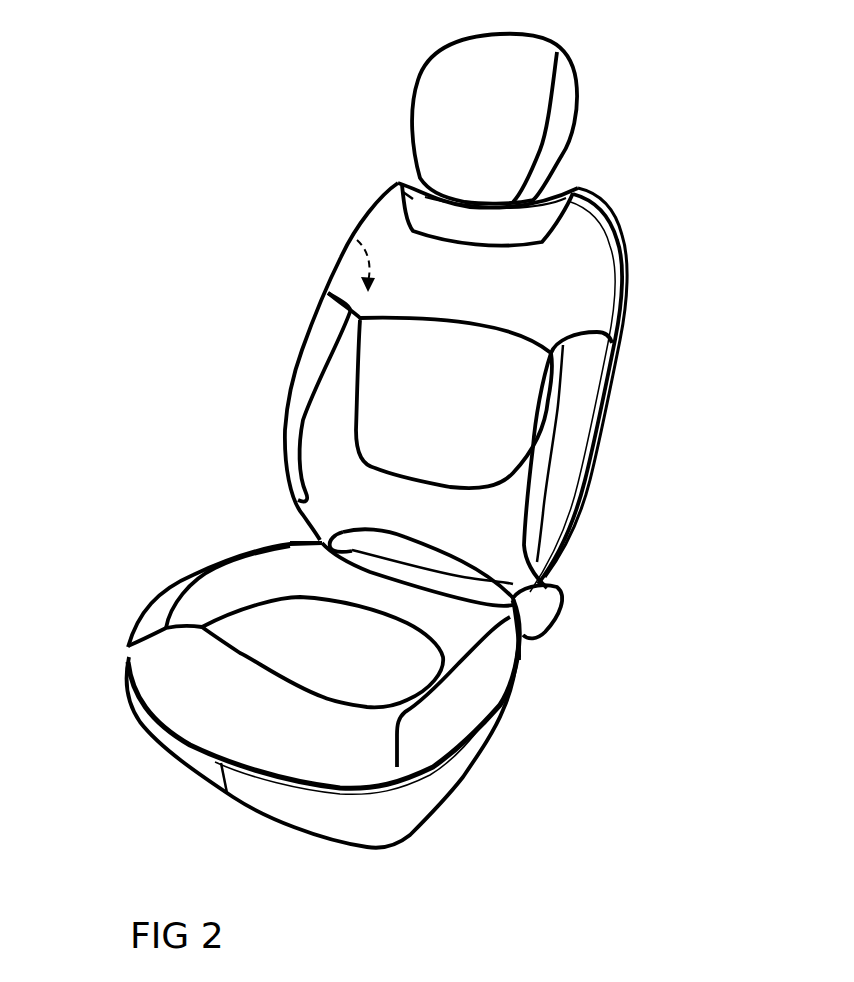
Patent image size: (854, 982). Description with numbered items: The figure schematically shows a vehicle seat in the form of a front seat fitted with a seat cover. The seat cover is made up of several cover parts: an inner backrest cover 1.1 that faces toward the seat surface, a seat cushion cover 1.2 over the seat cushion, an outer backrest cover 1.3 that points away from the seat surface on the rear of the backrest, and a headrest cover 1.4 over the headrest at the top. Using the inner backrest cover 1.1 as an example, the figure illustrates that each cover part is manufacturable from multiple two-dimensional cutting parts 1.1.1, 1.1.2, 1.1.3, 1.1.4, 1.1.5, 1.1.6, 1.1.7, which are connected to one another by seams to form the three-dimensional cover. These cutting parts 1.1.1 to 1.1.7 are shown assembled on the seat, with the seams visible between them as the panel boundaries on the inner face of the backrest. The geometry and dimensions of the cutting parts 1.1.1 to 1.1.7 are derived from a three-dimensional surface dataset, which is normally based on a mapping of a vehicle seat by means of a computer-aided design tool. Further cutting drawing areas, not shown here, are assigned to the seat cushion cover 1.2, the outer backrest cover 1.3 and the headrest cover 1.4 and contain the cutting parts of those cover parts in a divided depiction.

The inner backrest cover 1.1 is at (298, 354).
The cutting part 1.1.1 is at (295, 457).
The cutting part 1.1.2 is at (523, 525).
The cutting part 1.1.3 is at (527, 382).
The cutting part 1.1.4 is at (577, 457).
The cutting part 1.1.5 is at (552, 605).
The cutting part 1.1.6 is at (600, 291).
The cutting part 1.1.7 is at (398, 183).
The seat cushion cover 1.2 is at (210, 703).
The outer backrest cover 1.3 is at (347, 231).
The headrest cover 1.4 is at (440, 78).